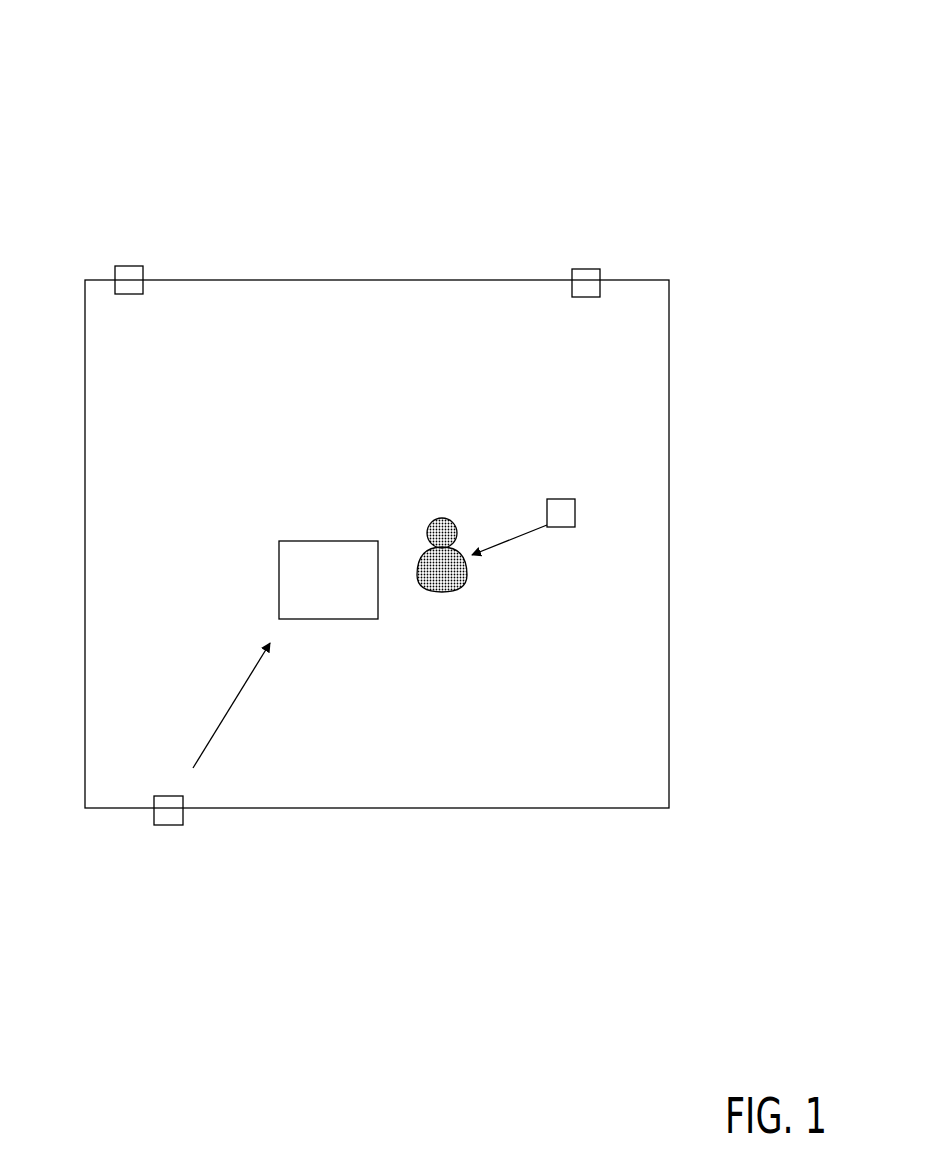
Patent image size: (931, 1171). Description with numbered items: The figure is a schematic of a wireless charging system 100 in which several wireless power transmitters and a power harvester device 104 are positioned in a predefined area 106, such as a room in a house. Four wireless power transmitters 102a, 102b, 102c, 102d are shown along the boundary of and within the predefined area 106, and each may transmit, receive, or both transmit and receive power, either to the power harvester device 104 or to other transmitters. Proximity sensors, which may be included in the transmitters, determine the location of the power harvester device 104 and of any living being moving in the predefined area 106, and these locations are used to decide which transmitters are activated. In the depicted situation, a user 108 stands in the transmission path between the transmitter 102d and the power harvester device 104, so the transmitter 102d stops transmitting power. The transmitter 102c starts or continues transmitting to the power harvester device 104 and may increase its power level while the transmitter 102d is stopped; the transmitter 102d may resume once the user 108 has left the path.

The wireless charging system 100 is at (98, 52).
The wireless power transmitter 102a is at (590, 269).
The wireless power transmitter 102b is at (140, 266).
The wireless power transmitter 102c is at (183, 825).
The wireless power transmitter 102d is at (575, 499).
The power harvester device 104 is at (378, 619).
The predefined area 106 is at (669, 372).
The user 108 is at (464, 588).